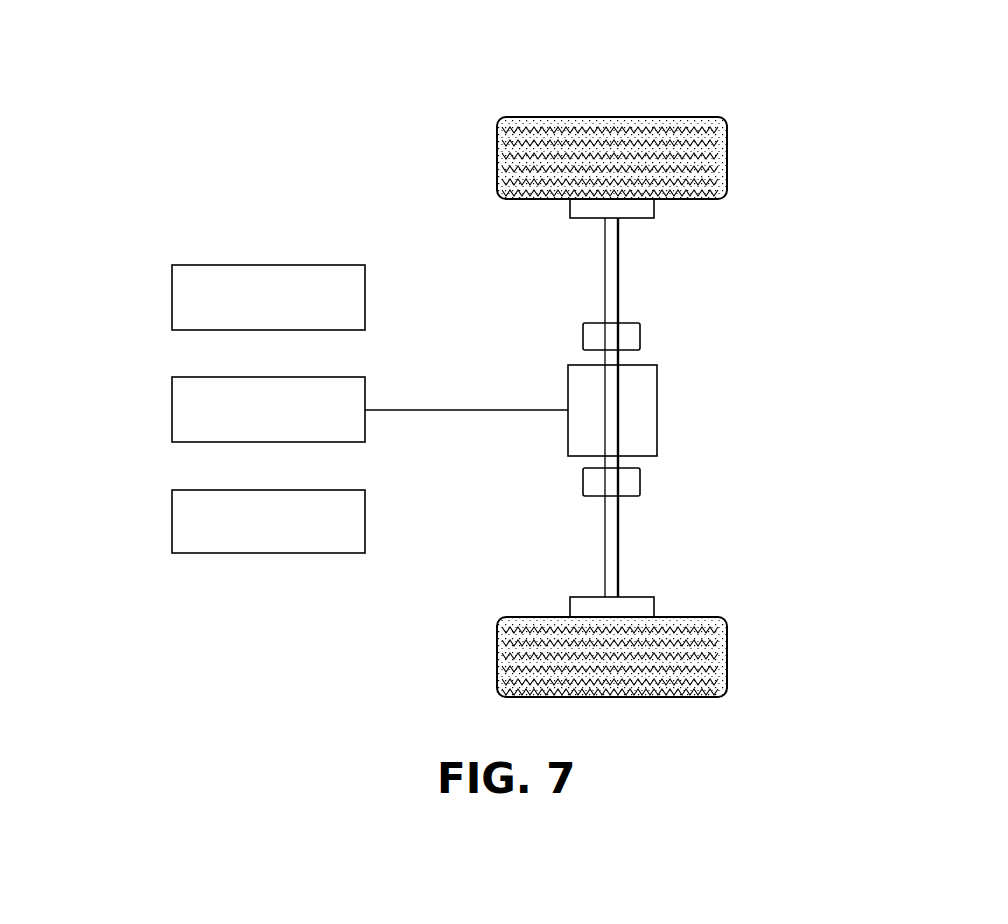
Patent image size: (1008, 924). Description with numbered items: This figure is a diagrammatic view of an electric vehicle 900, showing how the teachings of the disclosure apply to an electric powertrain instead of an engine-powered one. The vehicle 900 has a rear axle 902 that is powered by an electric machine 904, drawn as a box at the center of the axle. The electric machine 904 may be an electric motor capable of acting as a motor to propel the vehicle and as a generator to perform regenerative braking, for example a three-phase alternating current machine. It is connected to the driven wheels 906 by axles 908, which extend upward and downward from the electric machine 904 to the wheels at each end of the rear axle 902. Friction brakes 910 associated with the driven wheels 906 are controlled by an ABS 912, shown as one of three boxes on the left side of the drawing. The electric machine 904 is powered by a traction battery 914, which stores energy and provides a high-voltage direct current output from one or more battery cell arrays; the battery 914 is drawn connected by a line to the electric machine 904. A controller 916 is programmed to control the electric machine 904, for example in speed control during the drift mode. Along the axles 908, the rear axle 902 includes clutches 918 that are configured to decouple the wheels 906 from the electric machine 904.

The electric vehicle 900 is at (160, 208).
The rear axle 902 is at (762, 88).
The electric machine 904 is at (612, 410).
The driven wheels 906 is at (573, 117).
The axles 908 is at (620, 289).
The friction brakes 910 is at (633, 597).
The ABS 912 is at (232, 490).
The traction battery 914 is at (232, 377).
The controller 916 is at (232, 265).
The clutches 918 is at (592, 323).